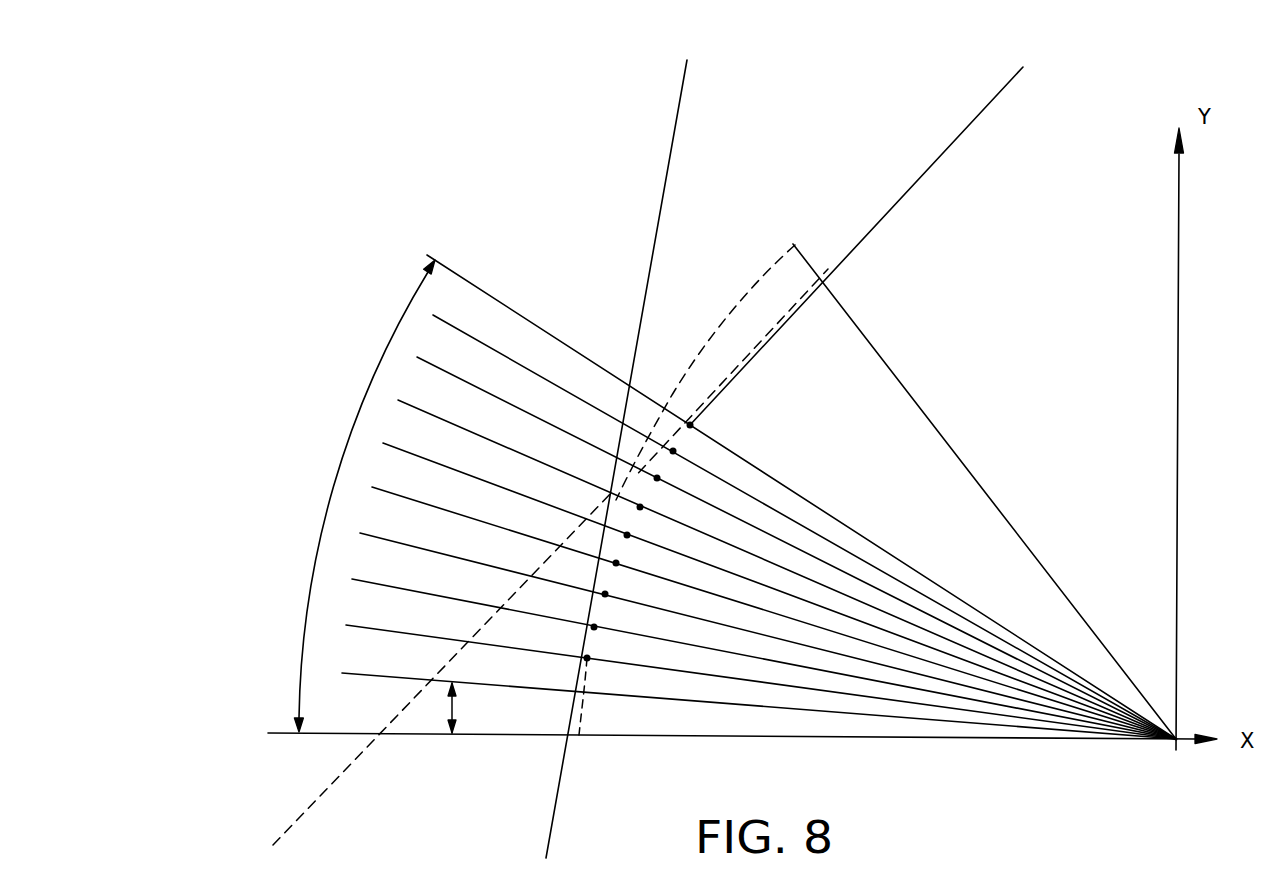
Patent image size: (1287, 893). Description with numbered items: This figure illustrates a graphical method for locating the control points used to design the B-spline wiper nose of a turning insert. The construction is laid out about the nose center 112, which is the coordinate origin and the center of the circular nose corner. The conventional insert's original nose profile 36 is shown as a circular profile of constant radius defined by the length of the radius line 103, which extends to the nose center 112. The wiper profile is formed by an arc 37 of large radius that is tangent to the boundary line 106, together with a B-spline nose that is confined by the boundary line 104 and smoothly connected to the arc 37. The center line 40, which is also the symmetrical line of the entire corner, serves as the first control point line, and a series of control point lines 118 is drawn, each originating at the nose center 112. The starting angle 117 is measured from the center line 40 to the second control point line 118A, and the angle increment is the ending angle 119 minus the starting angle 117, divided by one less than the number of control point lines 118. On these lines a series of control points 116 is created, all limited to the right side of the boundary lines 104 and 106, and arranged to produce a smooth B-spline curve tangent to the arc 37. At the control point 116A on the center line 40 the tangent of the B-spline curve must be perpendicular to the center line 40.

The original nose profile 36 is at (728, 310).
The arc 37 is at (750, 358).
The center line 40 is at (697, 736).
The radius line 103 is at (955, 450).
The boundary line 104 is at (677, 118).
The boundary line 106 is at (328, 790).
The nose center 112 is at (1173, 742).
The control points 116 is at (637, 693).
The control point 116A is at (592, 737).
The starting angle 117 is at (455, 708).
The control point lines 118 is at (988, 616).
The second control point line 118A is at (840, 713).
The ending angle 119 is at (358, 410).